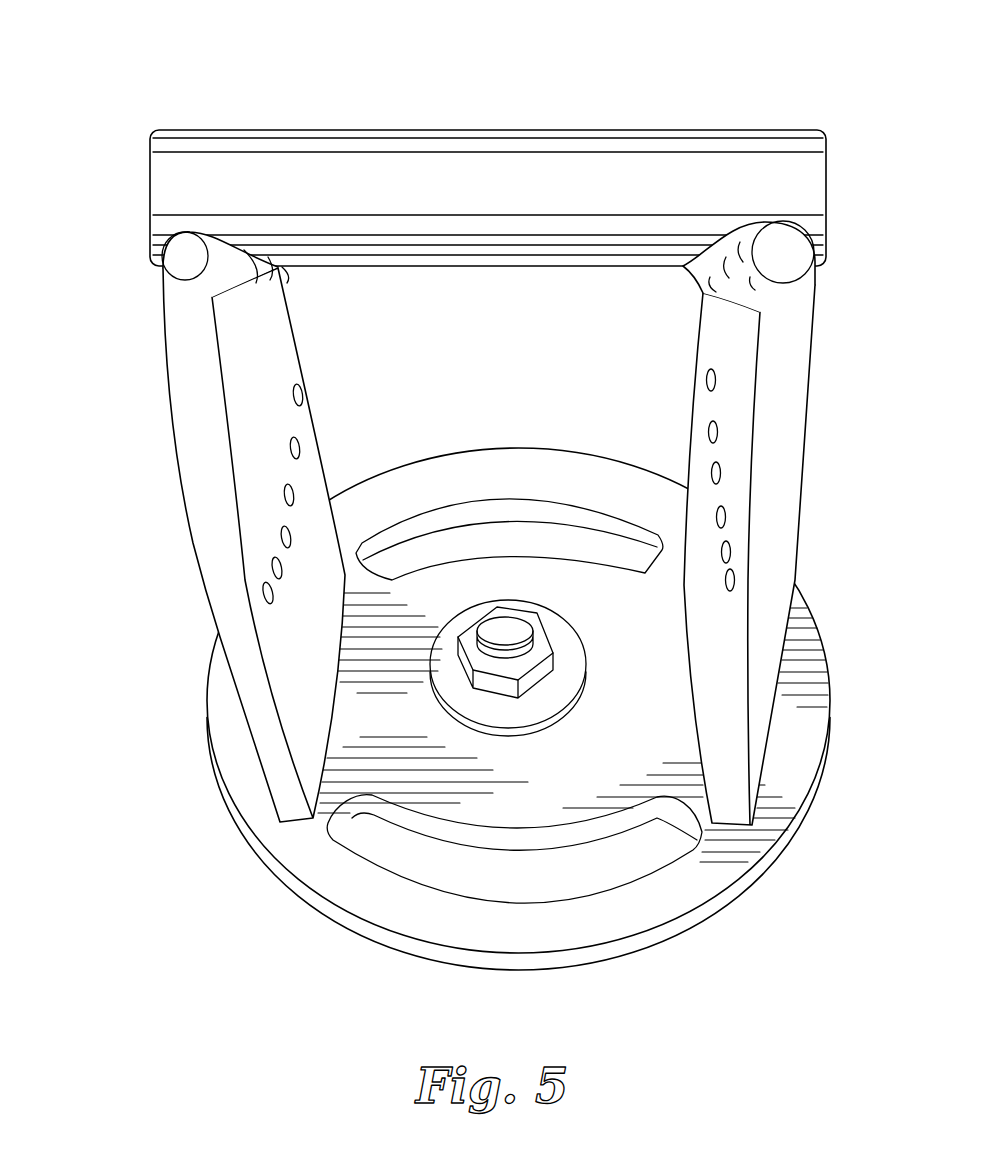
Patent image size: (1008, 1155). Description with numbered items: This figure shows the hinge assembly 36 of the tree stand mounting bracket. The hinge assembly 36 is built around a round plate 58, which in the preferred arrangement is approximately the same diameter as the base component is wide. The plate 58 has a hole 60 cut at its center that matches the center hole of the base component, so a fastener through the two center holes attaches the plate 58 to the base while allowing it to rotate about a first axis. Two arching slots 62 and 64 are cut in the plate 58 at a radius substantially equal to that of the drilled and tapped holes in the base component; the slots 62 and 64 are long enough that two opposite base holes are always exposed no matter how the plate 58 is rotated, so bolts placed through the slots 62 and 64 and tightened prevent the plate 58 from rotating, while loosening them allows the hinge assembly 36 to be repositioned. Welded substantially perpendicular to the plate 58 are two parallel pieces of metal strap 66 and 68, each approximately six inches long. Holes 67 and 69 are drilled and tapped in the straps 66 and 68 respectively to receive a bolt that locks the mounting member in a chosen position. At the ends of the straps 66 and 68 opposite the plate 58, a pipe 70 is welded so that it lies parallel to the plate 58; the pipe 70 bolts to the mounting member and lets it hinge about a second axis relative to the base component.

The hinge assembly 36 is at (460, 491).
The plate 58 is at (217, 724).
The hole 60 is at (533, 678).
The arching slot 62 is at (350, 818).
The arching slot 64 is at (503, 510).
The metal strap 66 is at (182, 451).
The holes 67 is at (303, 442).
The metal strap 68 is at (802, 380).
The holes 69 is at (708, 432).
The pipe 70 is at (469, 150).